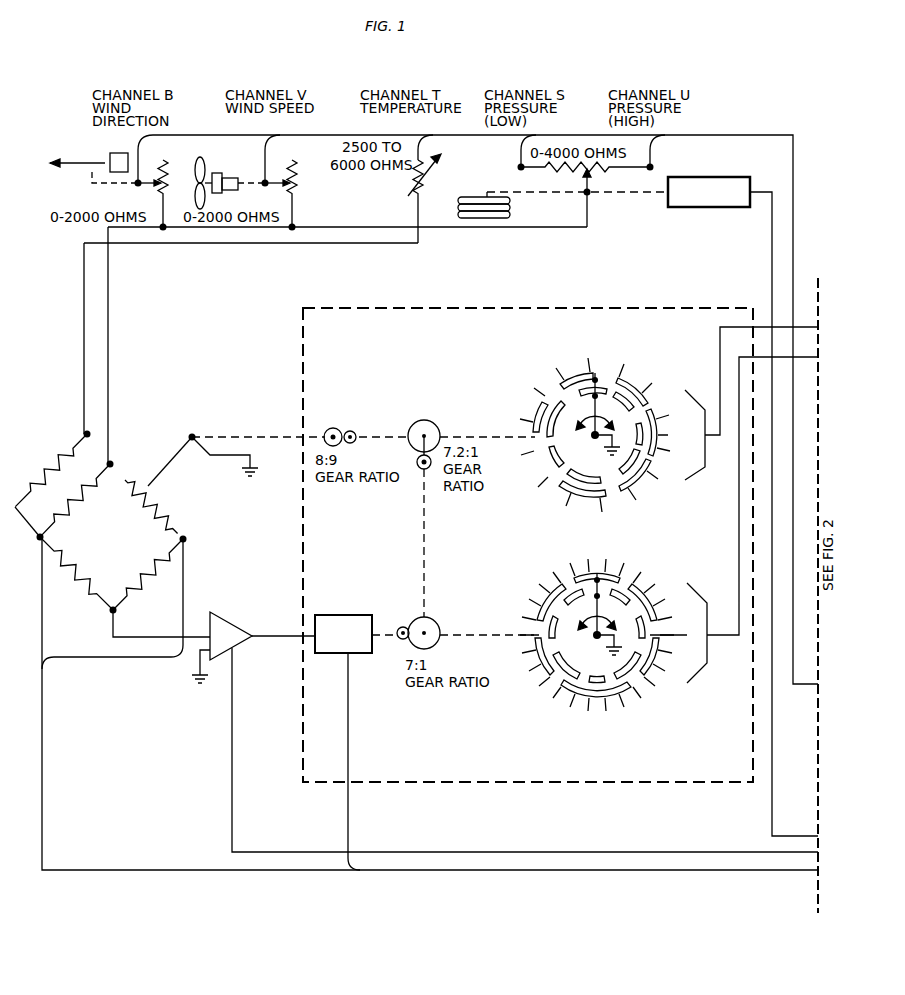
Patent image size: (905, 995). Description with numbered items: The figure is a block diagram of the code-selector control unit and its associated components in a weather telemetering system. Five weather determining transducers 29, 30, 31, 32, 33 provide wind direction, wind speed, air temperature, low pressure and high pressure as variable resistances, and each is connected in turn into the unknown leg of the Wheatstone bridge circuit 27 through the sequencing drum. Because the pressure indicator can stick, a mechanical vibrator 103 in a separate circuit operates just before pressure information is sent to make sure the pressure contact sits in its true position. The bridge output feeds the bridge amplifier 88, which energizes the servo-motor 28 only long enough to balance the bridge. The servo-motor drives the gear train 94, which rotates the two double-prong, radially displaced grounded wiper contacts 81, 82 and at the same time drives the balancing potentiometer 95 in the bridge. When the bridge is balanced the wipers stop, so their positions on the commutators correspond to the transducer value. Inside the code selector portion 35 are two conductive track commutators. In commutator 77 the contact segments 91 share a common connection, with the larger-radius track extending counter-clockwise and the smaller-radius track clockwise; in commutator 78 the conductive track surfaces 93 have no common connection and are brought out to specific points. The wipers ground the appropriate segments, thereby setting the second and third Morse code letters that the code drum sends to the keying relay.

The bridge circuit 27 is at (119, 570).
The servo-motor 28 is at (347, 615).
The weather determining transducer 29 is at (168, 159).
The weather determining transducer 30 is at (296, 159).
The weather determining transducer 31 is at (446, 151).
The weather determining transducer 32 is at (515, 151).
The weather determining transducer 33 is at (678, 153).
The code selector portion 35 is at (478, 782).
The commutator 77 is at (657, 422).
The commutator 78 is at (664, 558).
The wiper contact 81 is at (598, 378).
The wiper contact 82 is at (598, 578).
The bridge amplifier 88 is at (241, 645).
The contact segments 91 is at (540, 401).
The conductive track surfaces 93 is at (553, 640).
The gear train 94 is at (424, 538).
The balancing potentiometer 95 is at (197, 469).
The mechanical vibrator 103 is at (720, 178).